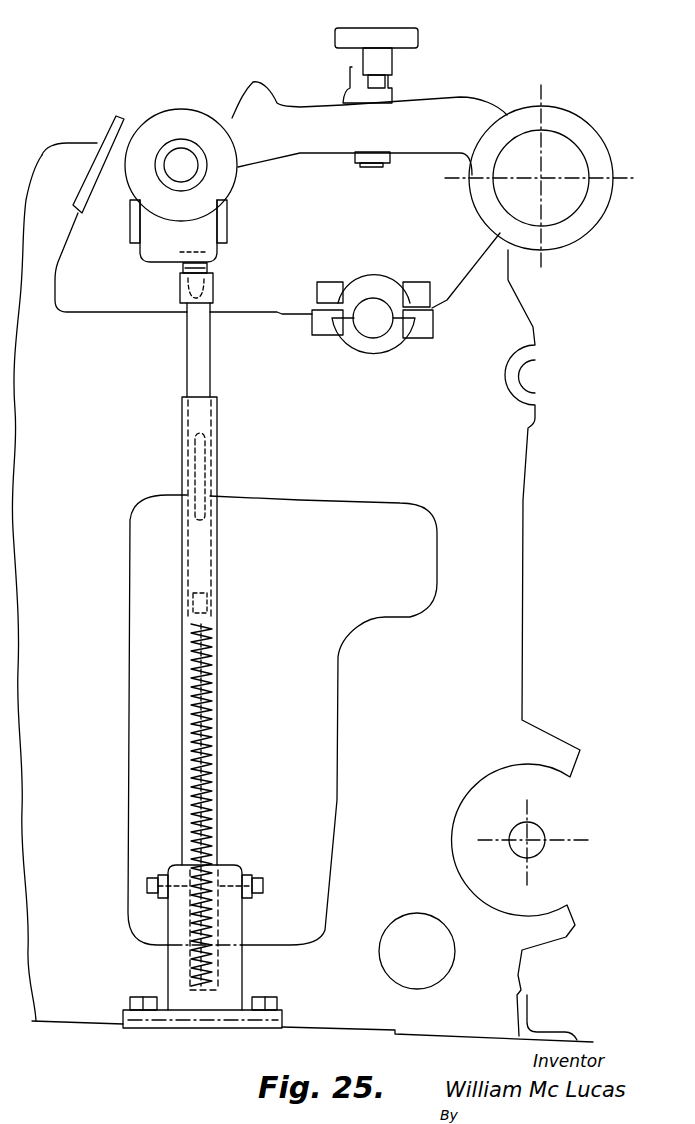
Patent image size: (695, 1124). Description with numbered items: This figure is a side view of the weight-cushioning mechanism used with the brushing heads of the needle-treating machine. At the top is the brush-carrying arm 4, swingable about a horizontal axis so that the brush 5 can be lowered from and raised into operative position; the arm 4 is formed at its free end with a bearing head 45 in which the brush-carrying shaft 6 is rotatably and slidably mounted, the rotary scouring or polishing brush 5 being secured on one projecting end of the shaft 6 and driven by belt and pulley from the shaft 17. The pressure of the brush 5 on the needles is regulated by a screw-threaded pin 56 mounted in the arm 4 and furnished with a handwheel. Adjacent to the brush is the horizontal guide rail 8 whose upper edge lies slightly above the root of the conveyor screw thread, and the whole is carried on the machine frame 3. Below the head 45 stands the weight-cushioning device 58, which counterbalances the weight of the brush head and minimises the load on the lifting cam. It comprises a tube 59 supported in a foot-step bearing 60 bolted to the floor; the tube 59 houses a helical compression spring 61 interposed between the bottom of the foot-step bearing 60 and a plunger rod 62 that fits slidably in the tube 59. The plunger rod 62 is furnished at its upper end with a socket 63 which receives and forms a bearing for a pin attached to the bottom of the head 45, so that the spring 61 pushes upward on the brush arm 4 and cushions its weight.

The machine frame 3 is at (440, 553).
The arm 4 is at (341, 150).
The brush 5 is at (178, 107).
The brush-carrying shaft 6 is at (181, 165).
The guide rail 8 is at (112, 128).
The shaft 17 is at (547, 830).
The bearing head 45 is at (178, 231).
The screw-threaded pin 56 is at (378, 82).
The weight-cushioning device 58 is at (222, 590).
The tube 59 is at (186, 718).
The foot-step bearing 60 is at (230, 935).
The helical compression spring 61 is at (220, 800).
The plunger rod 62 is at (200, 388).
The socket 63 is at (212, 298).